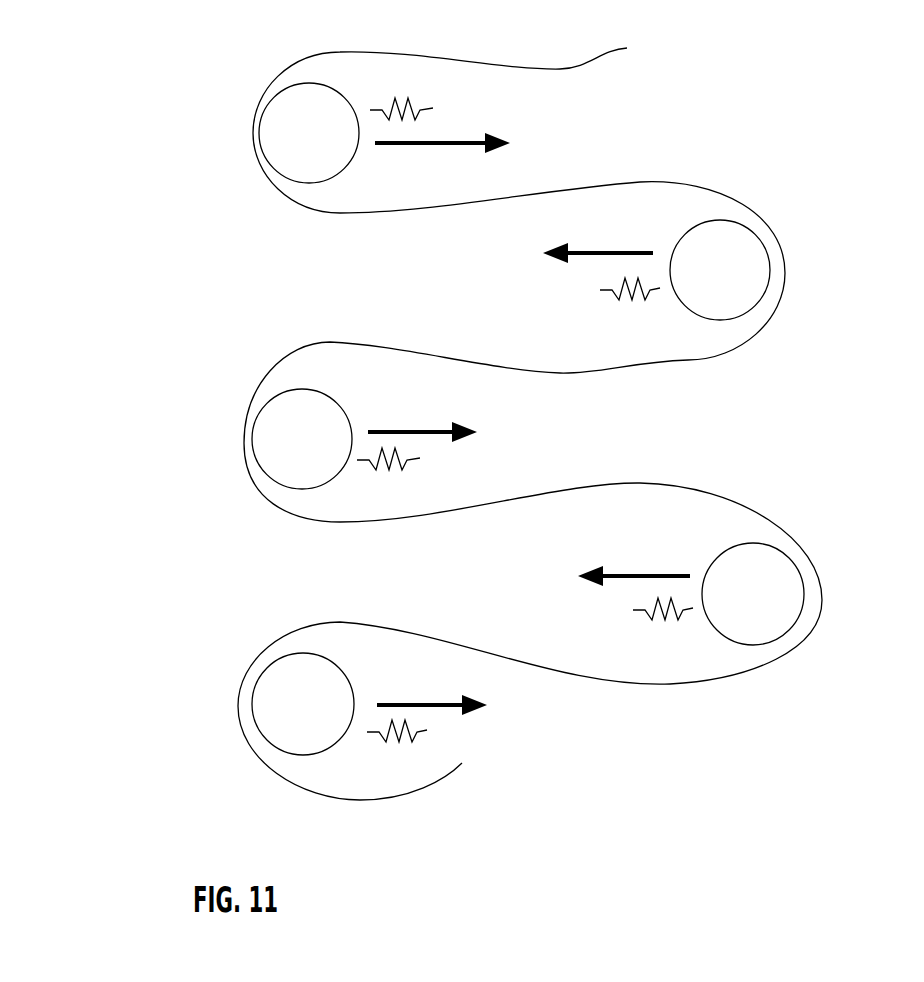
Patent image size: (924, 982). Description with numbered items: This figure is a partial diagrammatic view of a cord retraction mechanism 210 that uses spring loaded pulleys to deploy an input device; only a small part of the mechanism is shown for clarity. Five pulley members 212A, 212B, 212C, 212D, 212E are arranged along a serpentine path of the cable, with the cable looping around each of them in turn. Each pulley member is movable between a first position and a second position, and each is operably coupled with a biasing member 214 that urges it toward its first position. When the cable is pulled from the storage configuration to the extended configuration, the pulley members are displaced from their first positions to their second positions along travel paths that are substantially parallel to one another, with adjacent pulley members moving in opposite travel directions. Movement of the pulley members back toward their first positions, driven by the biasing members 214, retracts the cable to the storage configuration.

The conveyor belt system 210 is at (218, 78).
The pulley member 212A is at (288, 129).
The pulley member 212B is at (293, 432).
The pulley member 212C is at (302, 705).
The pulley member 212D is at (767, 603).
The pulley member 212E is at (730, 270).
The biasing member 214 is at (442, 100).